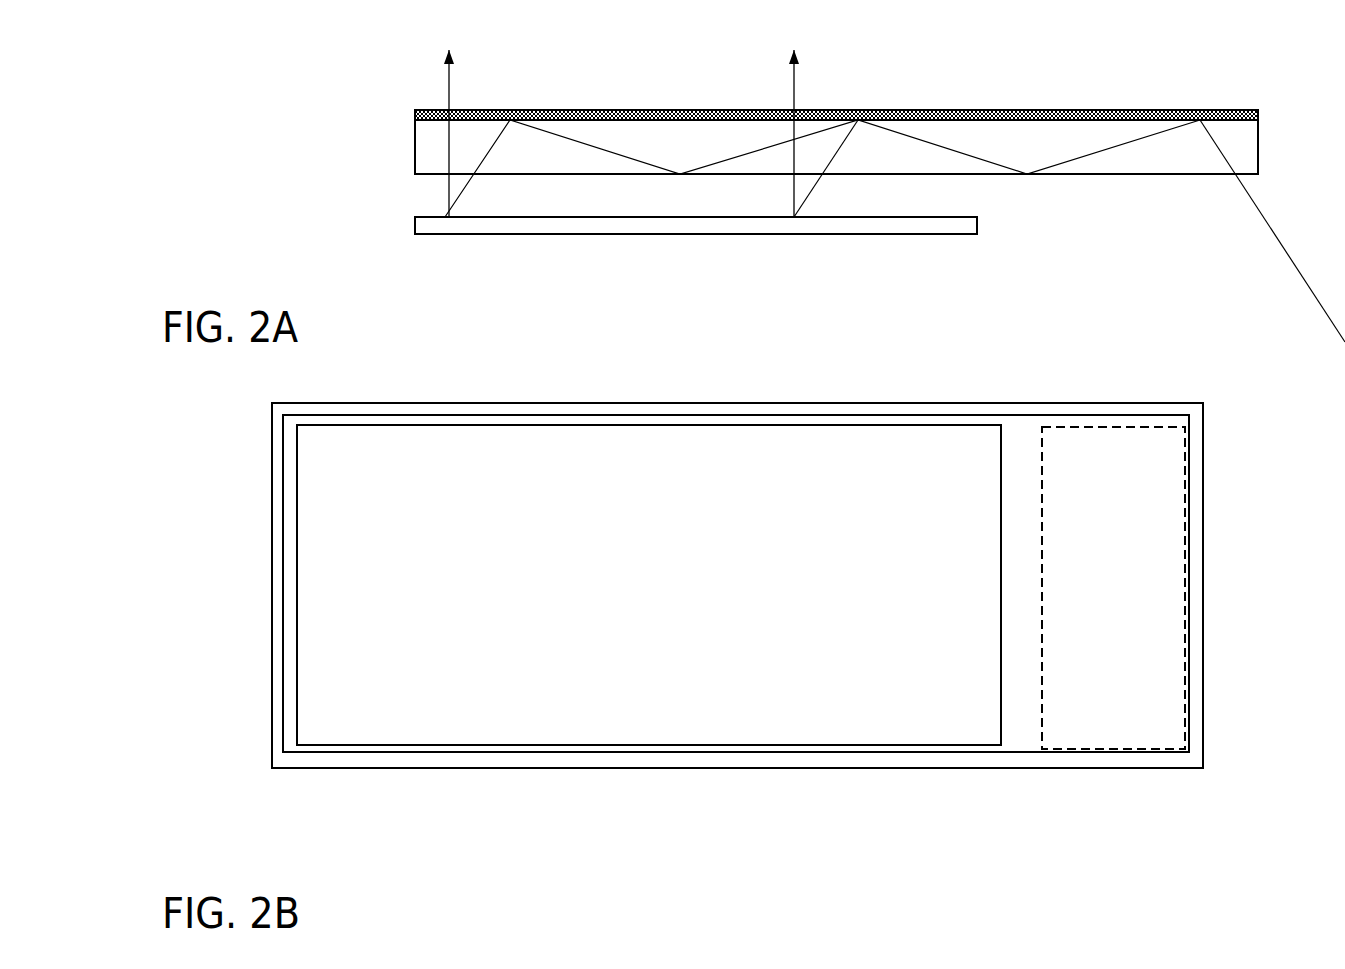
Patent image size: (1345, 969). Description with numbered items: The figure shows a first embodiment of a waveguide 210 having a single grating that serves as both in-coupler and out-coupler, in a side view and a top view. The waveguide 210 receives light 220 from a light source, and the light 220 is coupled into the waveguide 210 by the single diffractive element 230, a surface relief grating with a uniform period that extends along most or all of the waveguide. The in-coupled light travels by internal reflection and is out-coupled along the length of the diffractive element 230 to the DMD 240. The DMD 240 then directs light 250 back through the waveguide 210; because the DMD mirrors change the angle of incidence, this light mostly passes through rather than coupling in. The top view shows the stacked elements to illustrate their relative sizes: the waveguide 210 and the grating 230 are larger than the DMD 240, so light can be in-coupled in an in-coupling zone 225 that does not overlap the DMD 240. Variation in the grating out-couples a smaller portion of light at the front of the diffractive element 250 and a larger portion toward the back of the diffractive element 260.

In FIG. 2A, the waveguide 210 is at (412, 150).
In FIG. 2B, the waveguide 210 is at (1143, 769).
In FIG. 2A, the light 220 is at (1272, 271).
In FIG. 2B, the in-coupling zone 225 is at (1187, 587).
In FIG. 2A, the single diffractive element 230 is at (430, 102).
In FIG. 2B, the single diffractive element 230 is at (940, 753).
In FIG. 2A, the DMD 240 is at (412, 226).
In FIG. 2B, the DMD 240 is at (723, 745).
In FIG. 2A, the light from the DMD / front of the diffractive element 250 is at (822, 112).
In FIG. 2B, the light from the DMD / front of the diffractive element 250 is at (1183, 400).
In FIG. 2B, the back of the diffractive element 260 is at (280, 513).